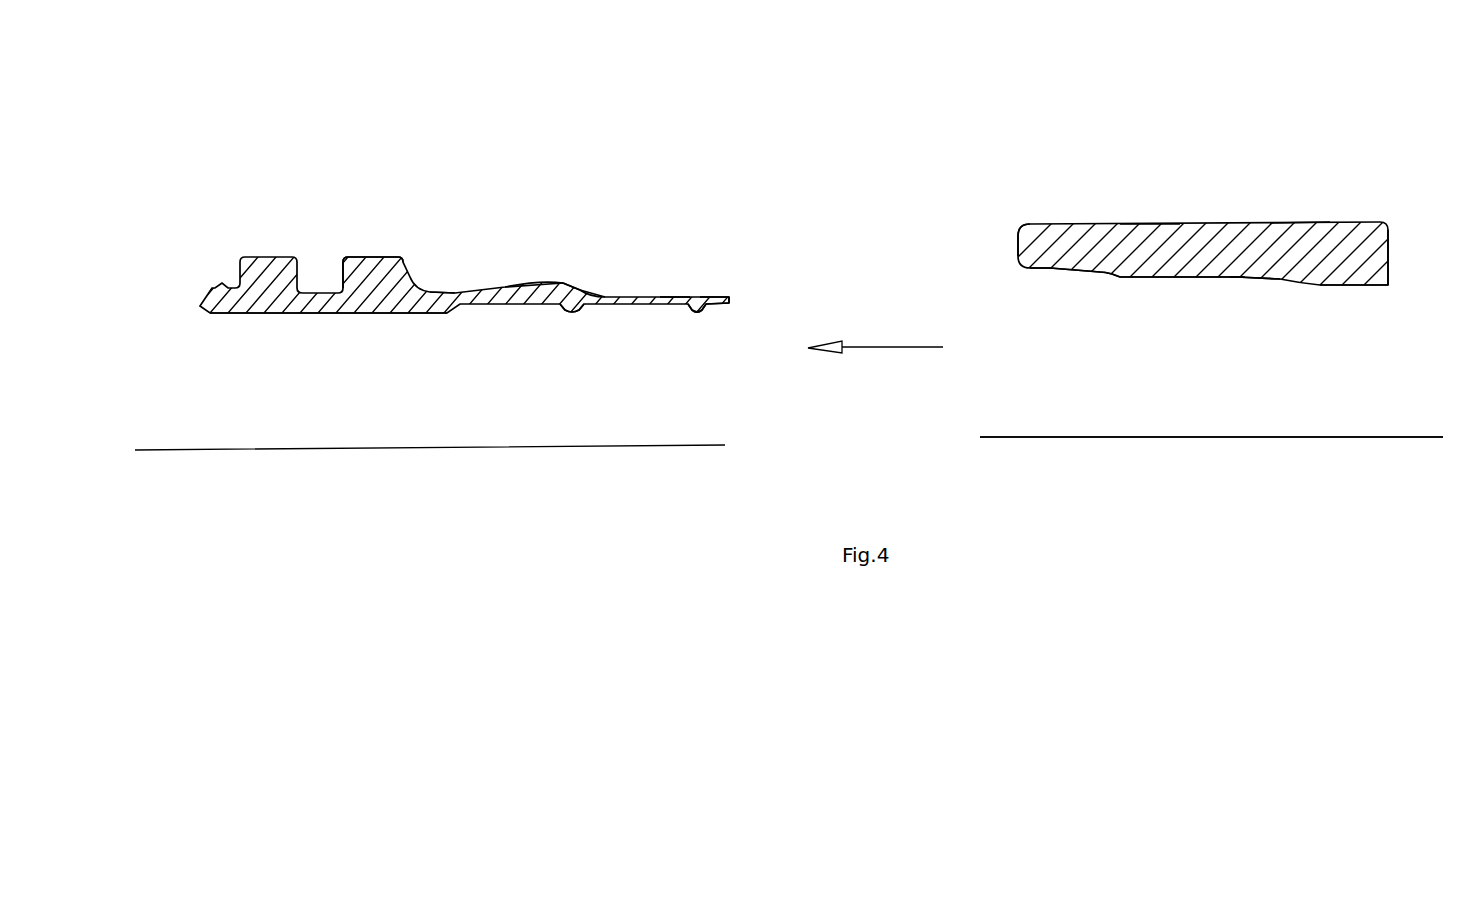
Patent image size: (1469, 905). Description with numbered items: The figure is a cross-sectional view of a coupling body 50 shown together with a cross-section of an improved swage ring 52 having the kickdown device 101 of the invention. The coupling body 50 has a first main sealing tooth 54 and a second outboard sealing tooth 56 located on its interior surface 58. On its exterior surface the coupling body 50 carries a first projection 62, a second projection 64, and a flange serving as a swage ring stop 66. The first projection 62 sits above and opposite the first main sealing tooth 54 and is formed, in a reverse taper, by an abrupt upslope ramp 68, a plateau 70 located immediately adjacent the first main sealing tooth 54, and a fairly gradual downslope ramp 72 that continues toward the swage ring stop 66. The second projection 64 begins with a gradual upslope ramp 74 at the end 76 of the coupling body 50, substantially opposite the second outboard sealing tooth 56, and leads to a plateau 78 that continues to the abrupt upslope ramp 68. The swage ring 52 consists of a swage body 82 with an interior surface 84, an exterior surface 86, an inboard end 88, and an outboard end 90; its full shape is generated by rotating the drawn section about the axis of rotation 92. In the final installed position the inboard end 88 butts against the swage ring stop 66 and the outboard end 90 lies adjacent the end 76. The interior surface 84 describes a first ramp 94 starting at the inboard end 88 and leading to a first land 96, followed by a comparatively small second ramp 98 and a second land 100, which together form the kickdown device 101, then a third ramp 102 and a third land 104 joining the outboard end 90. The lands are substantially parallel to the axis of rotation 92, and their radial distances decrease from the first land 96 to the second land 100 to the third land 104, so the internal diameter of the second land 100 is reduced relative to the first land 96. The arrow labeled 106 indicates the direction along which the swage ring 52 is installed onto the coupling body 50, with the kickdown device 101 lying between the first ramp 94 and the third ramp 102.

The coupling body 50 is at (572, 92).
The swage ring 52 is at (1180, 108).
The first main sealing tooth 54 is at (573, 313).
The second outboard sealing tooth 56 is at (696, 313).
The interior surface 58 is at (357, 312).
The first projection 62 is at (567, 282).
The second projection 64 is at (712, 297).
The swage ring stop 66 is at (365, 257).
The abrupt upslope ramp 68 is at (592, 282).
The plateau 70 is at (535, 282).
The downslope ramp 72 is at (467, 291).
The upslope ramp 74 is at (718, 299).
The end 76 is at (728, 304).
The plateau 78 is at (673, 296).
The swage body 82 is at (1298, 221).
The interior surface 84 is at (1237, 278).
The exterior surface 86 is at (1150, 224).
The inboard end 88 is at (1018, 232).
The outboard end 90 is at (1390, 252).
The axis of rotation 92 is at (1377, 438).
The first ramp 94 is at (1058, 272).
The first land 96 is at (1102, 273).
The second ramp 98 is at (1118, 278).
The second land 100 is at (1187, 278).
The kickdown device 101 is at (1126, 278).
The third ramp 102 is at (1290, 278).
The third land 104 is at (1377, 286).
The insertion direction 106 is at (883, 347).